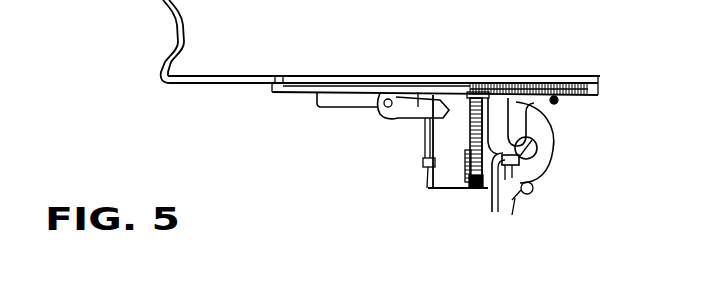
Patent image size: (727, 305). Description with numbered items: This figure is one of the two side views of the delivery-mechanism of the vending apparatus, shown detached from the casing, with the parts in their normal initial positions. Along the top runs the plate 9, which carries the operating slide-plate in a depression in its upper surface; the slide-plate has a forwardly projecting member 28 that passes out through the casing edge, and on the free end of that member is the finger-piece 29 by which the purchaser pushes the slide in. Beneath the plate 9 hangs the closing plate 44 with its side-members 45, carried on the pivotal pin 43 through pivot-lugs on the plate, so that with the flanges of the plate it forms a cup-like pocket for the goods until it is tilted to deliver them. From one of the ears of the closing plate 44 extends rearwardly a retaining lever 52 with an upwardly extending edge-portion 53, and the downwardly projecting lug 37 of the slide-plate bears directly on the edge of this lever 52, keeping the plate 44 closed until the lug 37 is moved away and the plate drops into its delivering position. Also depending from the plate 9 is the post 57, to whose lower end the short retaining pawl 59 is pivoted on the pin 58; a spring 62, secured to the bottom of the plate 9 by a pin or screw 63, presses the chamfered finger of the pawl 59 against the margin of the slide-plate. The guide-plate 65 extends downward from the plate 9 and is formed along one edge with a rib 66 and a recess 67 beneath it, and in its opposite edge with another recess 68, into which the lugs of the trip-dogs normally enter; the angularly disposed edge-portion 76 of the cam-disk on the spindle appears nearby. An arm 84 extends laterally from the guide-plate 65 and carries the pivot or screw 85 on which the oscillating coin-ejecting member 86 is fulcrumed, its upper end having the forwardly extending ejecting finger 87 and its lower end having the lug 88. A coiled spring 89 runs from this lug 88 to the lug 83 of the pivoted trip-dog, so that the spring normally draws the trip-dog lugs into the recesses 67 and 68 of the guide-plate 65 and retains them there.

The plate 9 is at (311, 90).
The forwardly projecting member 28 is at (205, 76).
The finger-piece 29 is at (173, 22).
The lug 37 is at (423, 102).
The pivotal pin 43 is at (385, 106).
The closing plate 44 is at (315, 93).
The side-members 45 is at (338, 102).
The retaining lever 52 is at (426, 116).
The upwardly extending edge-portion 53 is at (410, 92).
The post 57 is at (508, 84).
The pin 58 is at (478, 188).
The retaining pawl 59 is at (471, 136).
The spring 62 is at (543, 107).
The pin or screw 63 is at (558, 100).
The guide-plate 65 is at (457, 102).
The rib 66 is at (423, 151).
The recess 67 is at (428, 188).
The recess 68 is at (503, 192).
The angularly disposed edge-portion 76 is at (519, 164).
The lug 83 is at (423, 163).
The arm 84 is at (482, 162).
The pivot or screw 85 is at (537, 148).
The coin-ejecting member 86 is at (540, 133).
The ejecting finger 87 is at (517, 90).
The lug 88 is at (533, 190).
The coiled spring 89 is at (522, 200).